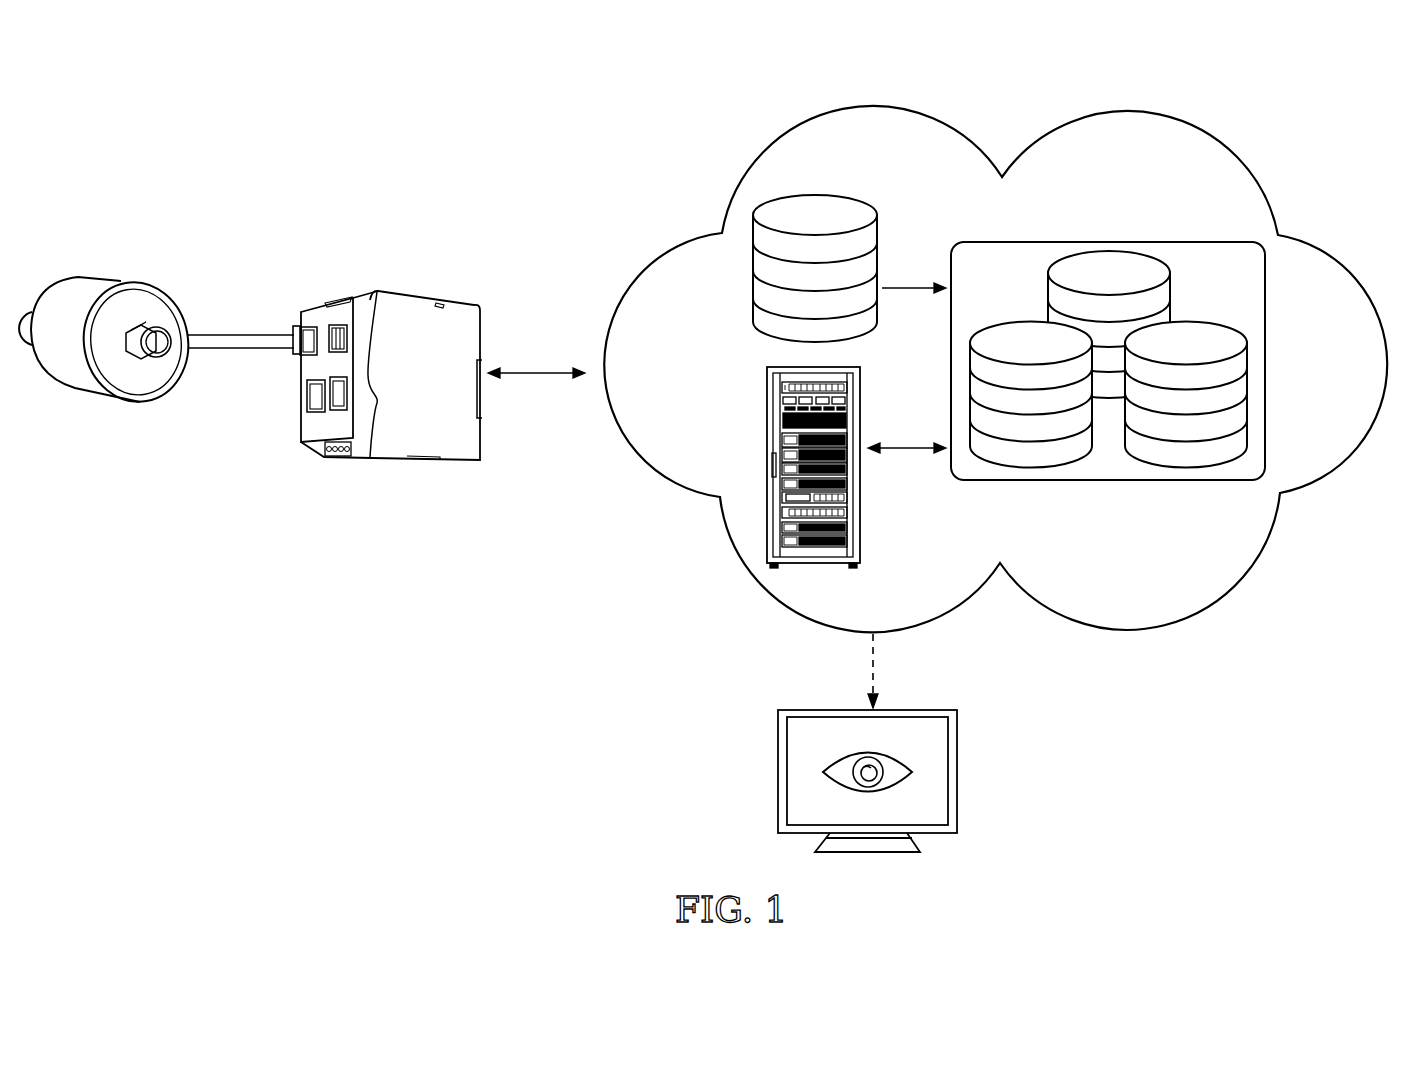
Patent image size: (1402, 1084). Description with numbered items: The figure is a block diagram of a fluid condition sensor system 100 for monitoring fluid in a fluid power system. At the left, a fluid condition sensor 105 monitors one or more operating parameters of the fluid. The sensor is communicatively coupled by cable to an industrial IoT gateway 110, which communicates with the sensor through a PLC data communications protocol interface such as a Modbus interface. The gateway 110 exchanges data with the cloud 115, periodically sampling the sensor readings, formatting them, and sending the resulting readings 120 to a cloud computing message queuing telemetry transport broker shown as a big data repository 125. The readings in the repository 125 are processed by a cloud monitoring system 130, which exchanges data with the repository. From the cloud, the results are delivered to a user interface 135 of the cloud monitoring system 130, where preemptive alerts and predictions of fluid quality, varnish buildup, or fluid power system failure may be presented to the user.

The fluid condition sensor system 100 is at (166, 162).
The fluid condition sensor 105 is at (143, 283).
The industrial IoT gateway 110 is at (387, 290).
The cloud 115 is at (780, 142).
The readings 120 is at (818, 206).
The big data repository 125 is at (1055, 240).
The cloud monitoring system 130 is at (765, 430).
The user interface 135 is at (778, 773).